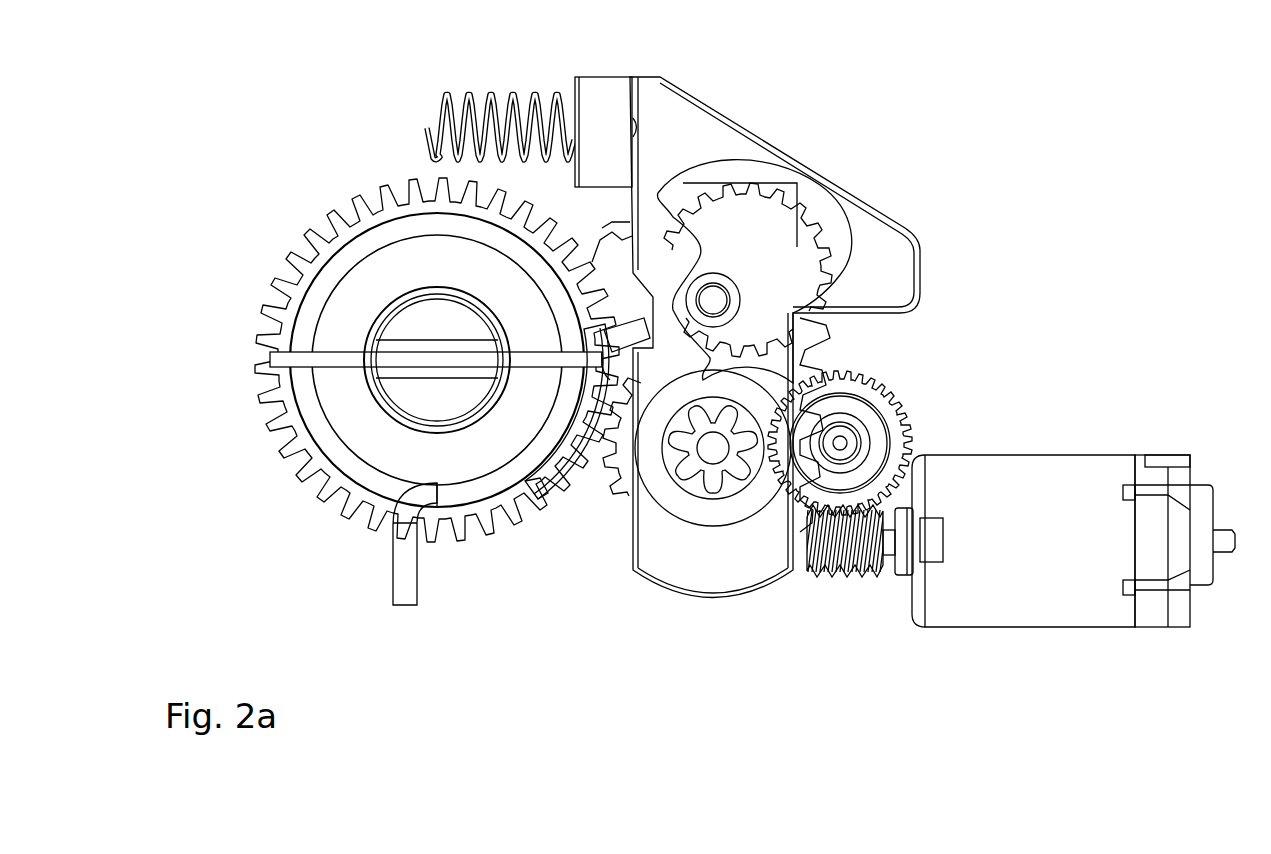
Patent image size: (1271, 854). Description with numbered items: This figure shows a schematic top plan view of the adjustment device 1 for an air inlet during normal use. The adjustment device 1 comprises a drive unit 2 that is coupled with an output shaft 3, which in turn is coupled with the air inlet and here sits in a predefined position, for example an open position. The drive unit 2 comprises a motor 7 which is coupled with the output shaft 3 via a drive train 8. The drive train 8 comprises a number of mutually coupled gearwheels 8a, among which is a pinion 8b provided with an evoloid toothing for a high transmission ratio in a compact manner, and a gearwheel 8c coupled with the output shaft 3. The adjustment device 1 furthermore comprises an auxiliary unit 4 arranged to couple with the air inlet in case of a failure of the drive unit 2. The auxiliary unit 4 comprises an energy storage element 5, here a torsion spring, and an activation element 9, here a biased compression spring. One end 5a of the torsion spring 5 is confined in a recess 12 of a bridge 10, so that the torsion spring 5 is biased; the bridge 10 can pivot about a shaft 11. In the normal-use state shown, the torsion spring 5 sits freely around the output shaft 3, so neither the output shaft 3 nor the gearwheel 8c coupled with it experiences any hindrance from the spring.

The adjustment device 1 is at (978, 152).
The drive unit 2 is at (1067, 337).
The output shaft 3 is at (413, 395).
The auxiliary unit 4 is at (355, 133).
The energy storage element 5 is at (318, 432).
The end of the torsion spring 5a is at (628, 330).
The motor 7 is at (1053, 492).
The drive train 8 is at (938, 337).
The gearwheels 8a is at (900, 403).
The pinion 8b is at (840, 443).
The gearwheel 8c is at (513, 507).
The activation element 9 is at (515, 95).
The bridge 10 is at (693, 132).
The shaft 11 is at (713, 448).
The recess 12 is at (640, 305).